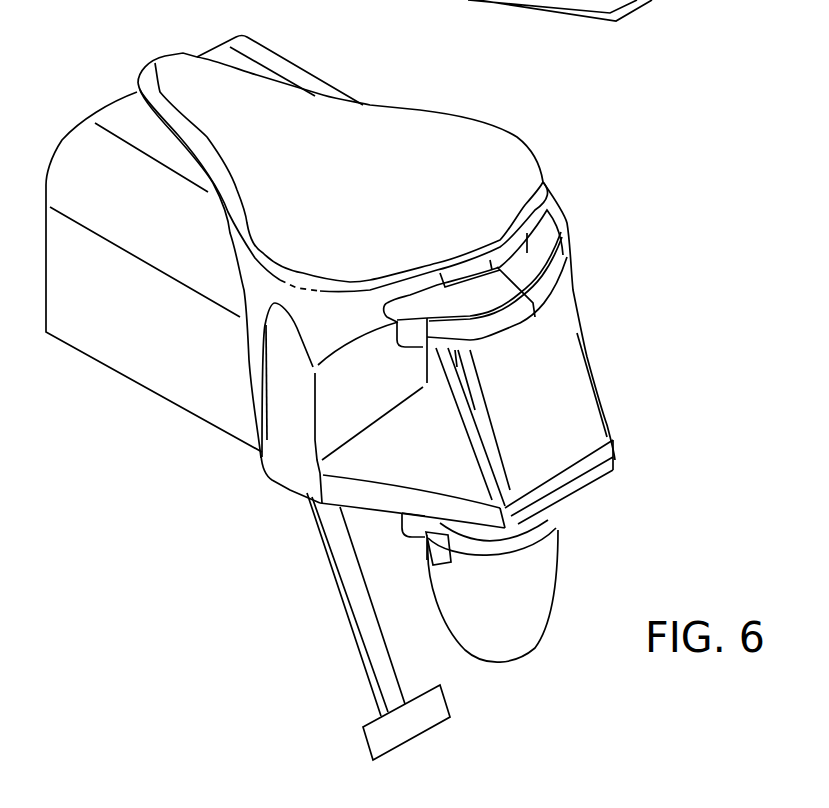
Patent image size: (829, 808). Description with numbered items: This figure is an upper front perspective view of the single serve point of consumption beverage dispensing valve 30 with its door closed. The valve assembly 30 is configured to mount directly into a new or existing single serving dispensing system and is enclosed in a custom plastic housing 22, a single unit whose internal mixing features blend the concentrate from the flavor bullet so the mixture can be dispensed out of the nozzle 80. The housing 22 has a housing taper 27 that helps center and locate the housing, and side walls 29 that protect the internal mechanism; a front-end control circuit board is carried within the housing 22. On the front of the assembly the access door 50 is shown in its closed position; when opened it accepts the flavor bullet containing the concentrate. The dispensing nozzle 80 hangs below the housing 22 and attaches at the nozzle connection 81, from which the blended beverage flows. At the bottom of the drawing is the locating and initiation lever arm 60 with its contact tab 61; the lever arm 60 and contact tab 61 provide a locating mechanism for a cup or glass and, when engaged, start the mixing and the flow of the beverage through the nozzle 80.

The housing 22 is at (533, 143).
The housing taper 27 is at (180, 54).
The side walls 29 is at (202, 418).
The single serve point of consumption beverage dispensing valve 30 is at (638, 265).
The access door 50 is at (611, 421).
The locating and initiation lever arm 60 is at (383, 609).
The contact tab 61 is at (368, 742).
The dispensing nozzle 80 is at (557, 572).
The nozzle connection 81 is at (617, 10).